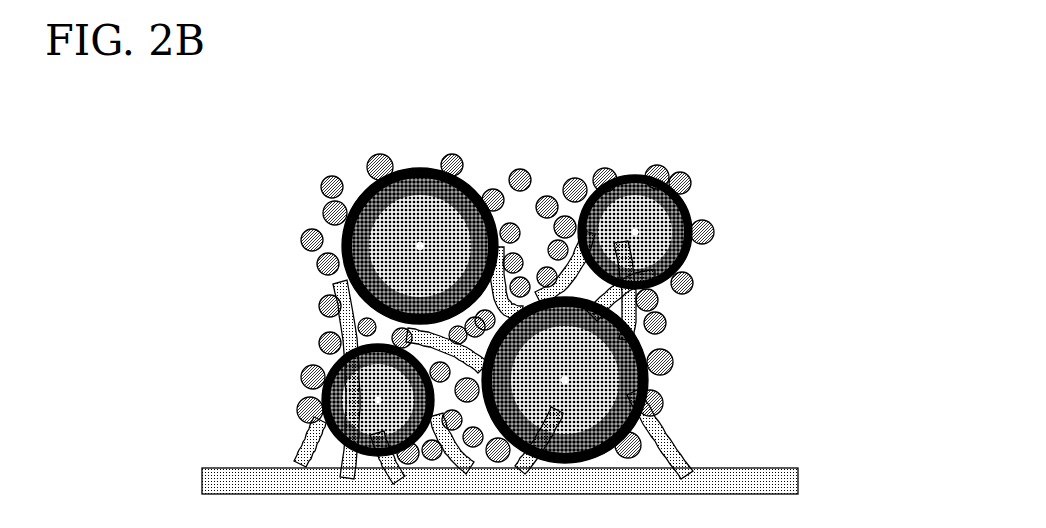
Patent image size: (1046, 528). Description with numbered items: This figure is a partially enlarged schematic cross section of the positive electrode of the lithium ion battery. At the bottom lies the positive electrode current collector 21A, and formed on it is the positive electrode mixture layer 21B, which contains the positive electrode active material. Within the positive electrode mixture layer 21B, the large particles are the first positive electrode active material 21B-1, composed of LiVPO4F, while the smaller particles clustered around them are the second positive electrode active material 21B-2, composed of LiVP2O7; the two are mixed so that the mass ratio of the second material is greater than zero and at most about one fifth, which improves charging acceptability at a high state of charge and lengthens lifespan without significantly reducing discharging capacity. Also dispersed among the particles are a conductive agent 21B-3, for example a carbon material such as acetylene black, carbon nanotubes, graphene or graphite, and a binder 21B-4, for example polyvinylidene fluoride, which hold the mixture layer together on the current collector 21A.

The positive electrode current collector 21A is at (773, 481).
The positive electrode mixture layer 21B is at (762, 290).
The first positive electrode active material 21B-1 is at (304, 350).
The second positive electrode active material 21B-2 is at (340, 156).
The conductive agent 21B-3 is at (335, 290).
The binder 21B-4 is at (302, 421).